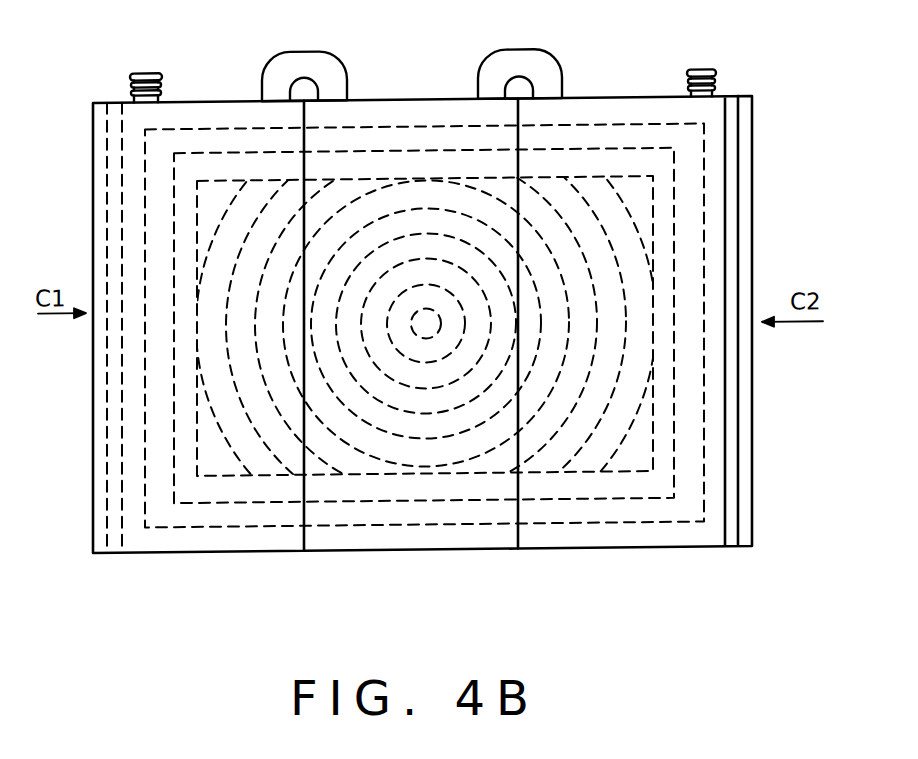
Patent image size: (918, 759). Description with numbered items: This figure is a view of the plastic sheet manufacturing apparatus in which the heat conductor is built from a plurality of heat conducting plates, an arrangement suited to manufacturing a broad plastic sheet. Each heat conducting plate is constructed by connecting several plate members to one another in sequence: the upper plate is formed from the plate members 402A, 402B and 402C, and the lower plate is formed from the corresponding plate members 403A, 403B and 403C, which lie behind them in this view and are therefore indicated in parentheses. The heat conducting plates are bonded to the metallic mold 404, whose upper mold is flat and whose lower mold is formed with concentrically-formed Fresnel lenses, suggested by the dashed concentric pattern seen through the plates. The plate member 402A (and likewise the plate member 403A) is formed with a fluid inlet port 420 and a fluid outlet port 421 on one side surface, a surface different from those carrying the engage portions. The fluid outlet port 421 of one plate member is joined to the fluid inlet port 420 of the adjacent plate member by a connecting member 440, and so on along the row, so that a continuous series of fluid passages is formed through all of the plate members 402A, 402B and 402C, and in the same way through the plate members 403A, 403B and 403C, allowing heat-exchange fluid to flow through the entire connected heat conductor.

The plate member 402A is at (198, 375).
The plate member 402B is at (411, 373).
The plate member 402C is at (635, 372).
The plate member 403A is at (213, 556).
The plate member 403B is at (388, 557).
The plate member 403C is at (573, 559).
The metallic mold 404 is at (690, 491).
The fluid inlet port 420 is at (133, 87).
The fluid outlet port 421 is at (715, 86).
The connecting member 440 is at (272, 78).